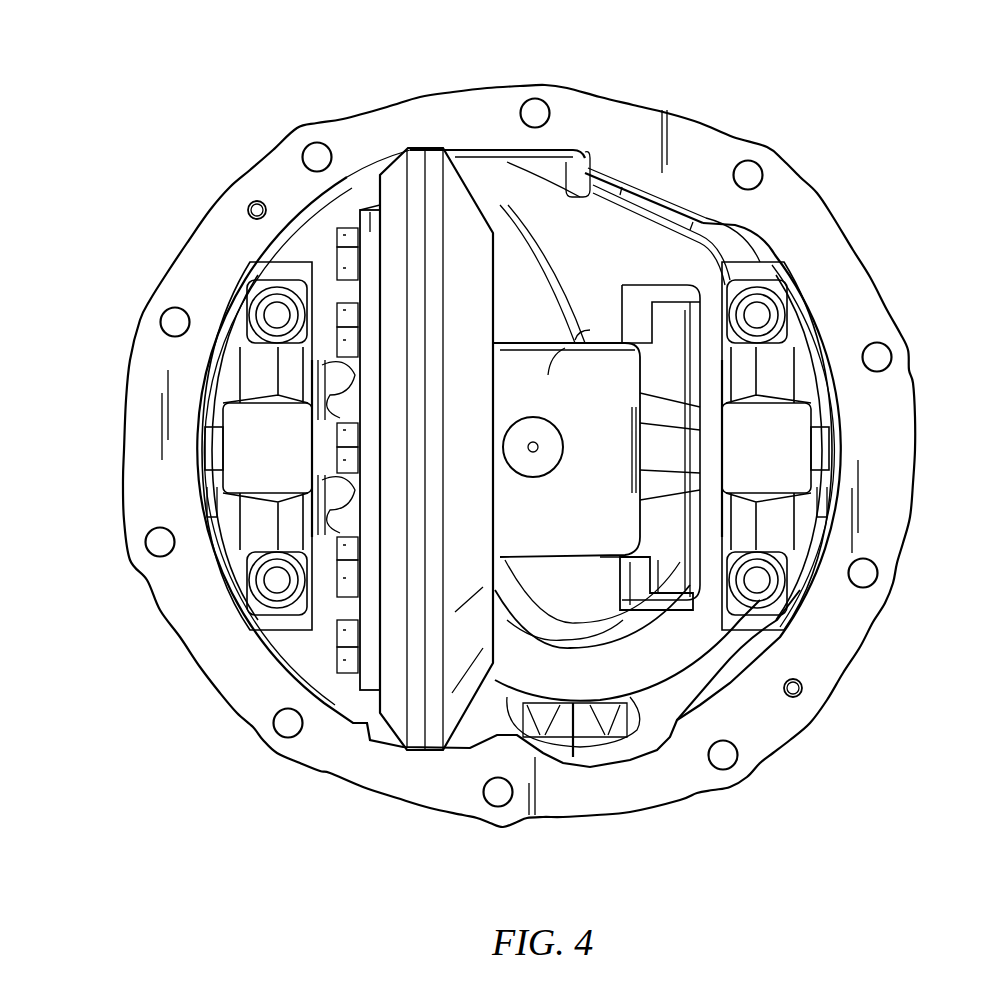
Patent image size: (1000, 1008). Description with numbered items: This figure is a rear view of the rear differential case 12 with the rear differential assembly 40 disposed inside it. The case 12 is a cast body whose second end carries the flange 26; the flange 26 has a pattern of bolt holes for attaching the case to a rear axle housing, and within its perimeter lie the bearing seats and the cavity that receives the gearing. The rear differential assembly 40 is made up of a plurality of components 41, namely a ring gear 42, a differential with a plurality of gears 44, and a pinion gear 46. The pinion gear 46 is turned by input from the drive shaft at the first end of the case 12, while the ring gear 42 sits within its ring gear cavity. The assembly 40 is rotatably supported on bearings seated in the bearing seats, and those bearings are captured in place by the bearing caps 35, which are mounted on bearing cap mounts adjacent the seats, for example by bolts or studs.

The rear differential case 12 is at (893, 148).
The flange 26 is at (682, 163).
The bearing caps 35 is at (252, 373).
The rear differential assembly 40 is at (558, 378).
The components 41 is at (483, 178).
The ring gear 42 is at (370, 228).
The differential with a plurality of gears 44 is at (640, 592).
The pinion gear 46 is at (557, 616).